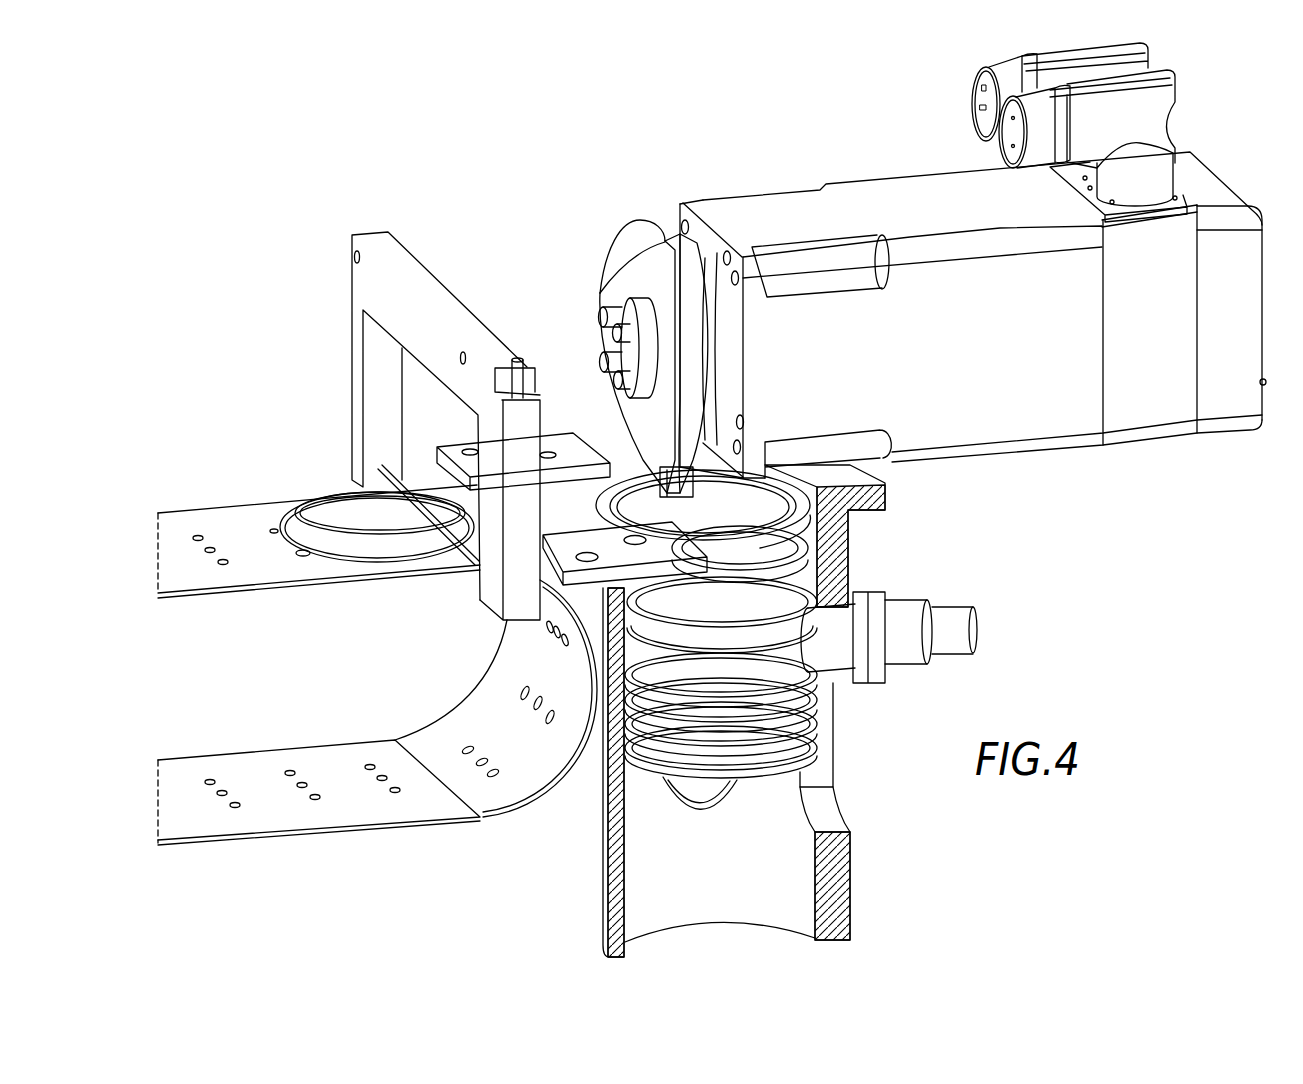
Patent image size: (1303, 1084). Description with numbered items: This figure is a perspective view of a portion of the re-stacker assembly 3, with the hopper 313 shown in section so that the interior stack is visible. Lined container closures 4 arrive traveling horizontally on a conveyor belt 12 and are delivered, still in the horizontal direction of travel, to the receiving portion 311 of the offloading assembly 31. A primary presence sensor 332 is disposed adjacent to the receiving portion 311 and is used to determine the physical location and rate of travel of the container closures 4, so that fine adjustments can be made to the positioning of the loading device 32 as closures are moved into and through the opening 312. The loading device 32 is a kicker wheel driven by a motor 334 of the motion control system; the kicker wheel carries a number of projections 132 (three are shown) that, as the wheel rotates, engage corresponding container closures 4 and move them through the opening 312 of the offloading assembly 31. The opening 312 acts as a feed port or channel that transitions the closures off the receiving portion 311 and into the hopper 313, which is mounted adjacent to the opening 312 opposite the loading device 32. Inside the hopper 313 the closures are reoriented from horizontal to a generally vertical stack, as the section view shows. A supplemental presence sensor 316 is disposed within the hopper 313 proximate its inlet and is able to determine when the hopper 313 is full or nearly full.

The re-stacker assembly 3 is at (542, 160).
The container closure 4 is at (337, 510).
The conveyor belt 12 is at (170, 523).
The offloading assembly 31 is at (1094, 543).
The loading device 32 is at (624, 238).
The projection 132 is at (605, 292).
The receiving portion 311 is at (572, 456).
The opening 312 is at (797, 460).
The hopper 313 is at (850, 877).
The supplemental presence sensor 316 is at (973, 630).
The primary presence sensor 332 is at (362, 282).
The motor 334 is at (880, 200).